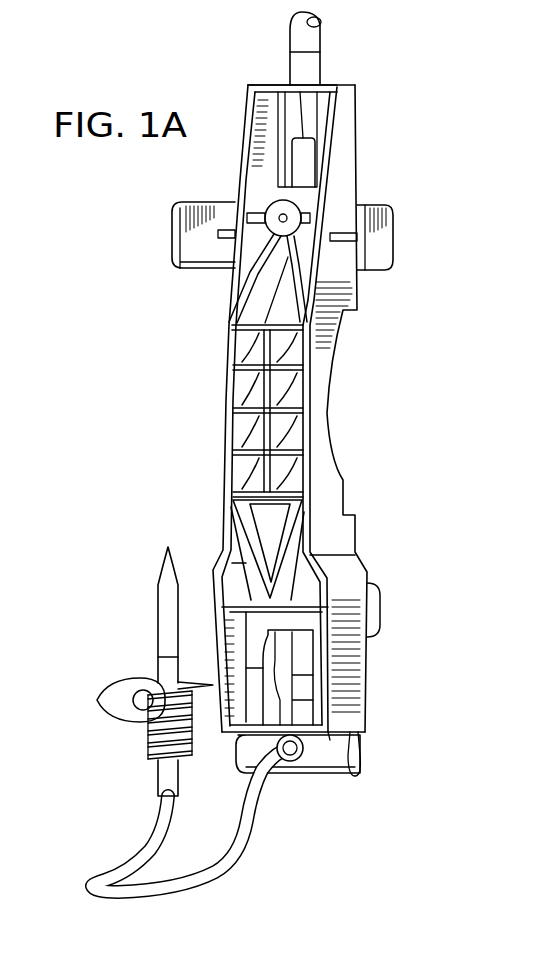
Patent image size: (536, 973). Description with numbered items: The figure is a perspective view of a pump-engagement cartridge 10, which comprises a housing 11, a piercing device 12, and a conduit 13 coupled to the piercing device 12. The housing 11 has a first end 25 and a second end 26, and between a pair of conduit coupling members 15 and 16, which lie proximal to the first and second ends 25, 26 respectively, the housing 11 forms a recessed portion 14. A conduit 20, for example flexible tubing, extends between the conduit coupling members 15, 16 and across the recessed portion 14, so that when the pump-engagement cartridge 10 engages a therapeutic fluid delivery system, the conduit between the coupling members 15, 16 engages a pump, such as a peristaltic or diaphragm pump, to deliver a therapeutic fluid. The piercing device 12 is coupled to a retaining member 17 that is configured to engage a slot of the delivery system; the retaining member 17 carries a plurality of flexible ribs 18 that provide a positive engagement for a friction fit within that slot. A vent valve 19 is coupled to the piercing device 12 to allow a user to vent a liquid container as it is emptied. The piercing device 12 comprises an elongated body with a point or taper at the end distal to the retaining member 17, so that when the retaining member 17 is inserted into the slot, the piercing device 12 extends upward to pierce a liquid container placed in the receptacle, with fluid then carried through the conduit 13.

The pump-engagement cartridge 10 is at (146, 332).
The housing 11 is at (222, 388).
The piercing device 12 is at (158, 590).
The conduit 13 is at (237, 873).
The recessed portion 14 is at (327, 432).
The conduit coupling member 15 is at (303, 712).
The conduit coupling member 16 is at (322, 70).
The retaining member 17 is at (120, 744).
The flexible ribs 18 is at (150, 760).
The vent valve 19 is at (97, 700).
The conduit 20 is at (307, 173).
The first end 25 is at (325, 773).
The second end 26 is at (266, 86).